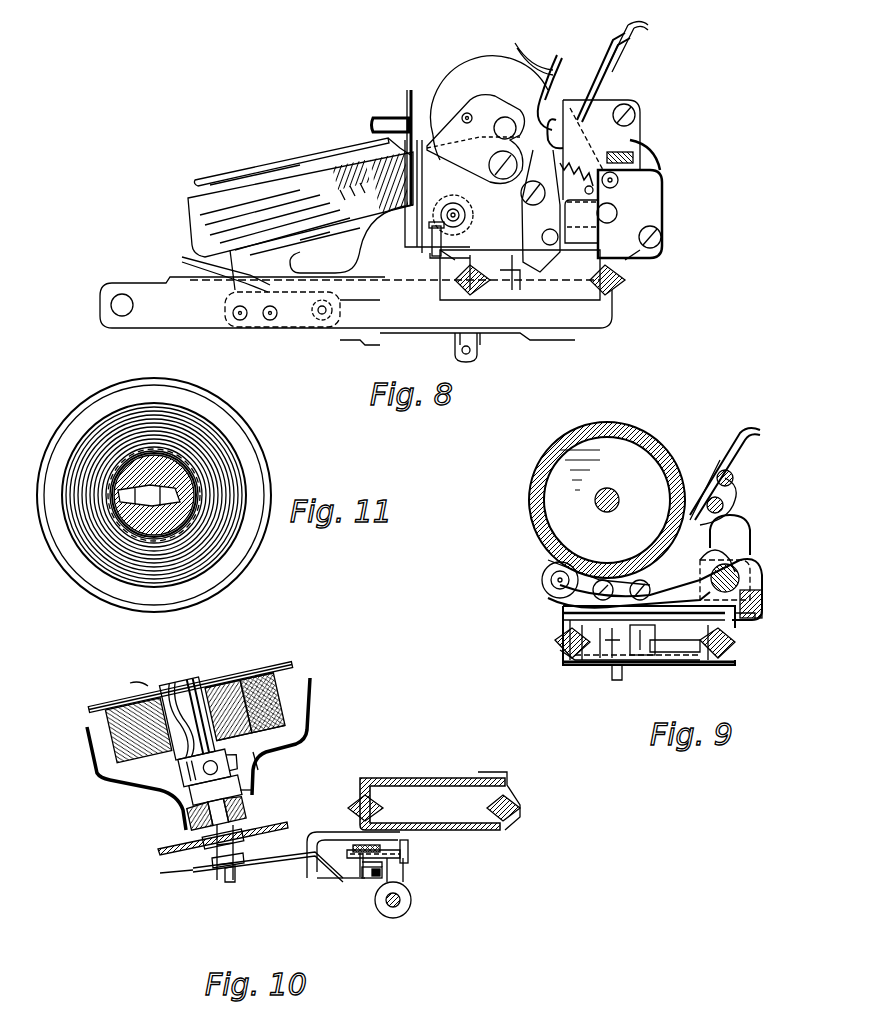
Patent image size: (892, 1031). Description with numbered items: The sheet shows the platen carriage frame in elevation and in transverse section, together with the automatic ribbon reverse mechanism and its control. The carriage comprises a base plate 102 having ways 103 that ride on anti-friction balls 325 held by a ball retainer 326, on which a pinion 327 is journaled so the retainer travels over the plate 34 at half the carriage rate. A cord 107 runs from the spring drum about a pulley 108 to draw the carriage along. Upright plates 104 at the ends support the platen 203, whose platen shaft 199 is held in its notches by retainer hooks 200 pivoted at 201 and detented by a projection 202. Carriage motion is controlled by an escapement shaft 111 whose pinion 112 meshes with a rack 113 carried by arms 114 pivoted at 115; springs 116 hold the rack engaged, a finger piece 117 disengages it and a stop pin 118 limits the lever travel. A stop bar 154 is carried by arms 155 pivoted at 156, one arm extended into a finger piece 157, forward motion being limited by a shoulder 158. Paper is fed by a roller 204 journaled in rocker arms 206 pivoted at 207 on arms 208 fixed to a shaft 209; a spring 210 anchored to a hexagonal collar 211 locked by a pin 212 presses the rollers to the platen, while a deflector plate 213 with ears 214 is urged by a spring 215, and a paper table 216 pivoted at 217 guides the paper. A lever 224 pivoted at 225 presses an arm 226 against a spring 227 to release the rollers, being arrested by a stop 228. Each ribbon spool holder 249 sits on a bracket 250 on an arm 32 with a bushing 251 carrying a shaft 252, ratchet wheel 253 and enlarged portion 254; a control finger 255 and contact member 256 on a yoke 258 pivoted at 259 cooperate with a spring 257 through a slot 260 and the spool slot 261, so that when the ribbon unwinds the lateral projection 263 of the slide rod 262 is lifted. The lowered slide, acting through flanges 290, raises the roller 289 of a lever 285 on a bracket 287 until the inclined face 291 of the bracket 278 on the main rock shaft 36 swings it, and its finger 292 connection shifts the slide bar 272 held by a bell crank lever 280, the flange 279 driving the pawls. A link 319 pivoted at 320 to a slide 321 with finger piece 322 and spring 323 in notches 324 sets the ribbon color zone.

In FIG. 8, the arm 32 is at (200, 315).
In FIG. 9, the plate 34 is at (700, 660).
In FIG. 10, the plate 34 is at (465, 828).
In FIG. 10, the main rock shaft 36 is at (402, 899).
In FIG. 9, the base plate 102 is at (570, 612).
In FIG. 9, the ways 103 is at (570, 638).
In FIG. 8, the upright plates 104 is at (382, 136).
In FIG. 9, the cord 107 is at (618, 680).
In FIG. 9, the pulley 108 is at (618, 668).
In FIG. 9, the escapement shaft 111 is at (690, 678).
In FIG. 9, the pinion 112 is at (730, 622).
In FIG. 8, the rack 113 is at (580, 300).
In FIG. 9, the rack 113 is at (700, 668).
In FIG. 8, the arms 114 is at (620, 250).
In FIG. 8, the pivot 115 is at (430, 242).
In FIG. 8, the springs 116 is at (634, 157).
In FIG. 8, the finger piece 117 is at (566, 90).
In FIG. 8, the stop pin 118 is at (440, 270).
In FIG. 8, the stop bar 154 is at (652, 212).
In FIG. 9, the stop bar 154 is at (762, 595).
In FIG. 9, the arms 155 is at (745, 575).
In FIG. 8, the pivot 156 is at (618, 182).
In FIG. 9, the pivot 156 is at (722, 545).
In FIG. 8, the finger piece 157 is at (535, 72).
In FIG. 8, the shoulder 158 is at (665, 262).
In FIG. 8, the platen shaft 199 is at (381, 100).
In FIG. 8, the retainer hooks 200 is at (505, 100).
In FIG. 8, the pivot 201 is at (388, 140).
In FIG. 8, the projection 202 is at (465, 115).
In FIG. 8, the platen 203 is at (462, 70).
In FIG. 9, the platen 203 is at (530, 498).
In FIG. 9, the roller 204 is at (552, 573).
In FIG. 9, the rocker arms 206 is at (552, 588).
In FIG. 9, the pivots 207 is at (650, 588).
In FIG. 9, the arms 208 is at (648, 582).
In FIG. 8, the shaft 209 is at (640, 225).
In FIG. 9, the shaft 209 is at (755, 575).
In FIG. 9, the spring 210 is at (650, 540).
In FIG. 9, the hexagonal collar 211 is at (725, 560).
In FIG. 9, the pin 212 is at (772, 600).
In FIG. 9, the deflector plate 213 is at (552, 560).
In FIG. 9, the ears 214 is at (570, 604).
In FIG. 9, the spring 215 is at (600, 580).
In FIG. 9, the paper table 216 is at (738, 432).
In FIG. 9, the pivot 217 is at (705, 492).
In FIG. 8, the lever 224 is at (590, 120).
In FIG. 8, the pivot 225 is at (596, 170).
In FIG. 8, the arm 226 is at (635, 240).
In FIG. 8, the spring 227 is at (640, 115).
In FIG. 8, the stop 228 is at (620, 188).
In FIG. 11, the ribbon spool holder 249 is at (268, 462).
In FIG. 10, the ribbon spool holder 249 is at (295, 748).
In FIG. 10, the bracket 250 is at (262, 778).
In FIG. 10, the bushing 251 is at (210, 836).
In FIG. 11, the shaft 252 is at (225, 548).
In FIG. 10, the shaft 252 is at (215, 688).
In FIG. 10, the ratchet wheel 253 is at (180, 848).
In FIG. 10, the enlarged portion 254 is at (180, 800).
In FIG. 11, the control finger 255 is at (100, 535).
In FIG. 10, the control finger 255 is at (131, 683).
In FIG. 11, the contact member 256 is at (190, 452).
In FIG. 10, the contact member 256 is at (305, 758).
In FIG. 11, the spring 257 is at (110, 452).
In FIG. 10, the spring 257 is at (240, 690).
In FIG. 10, the yoke 258 is at (185, 768).
In FIG. 11, the pivot 259 is at (160, 450).
In FIG. 10, the pivot 259 is at (190, 815).
In FIG. 10, the slot 260 is at (290, 692).
In FIG. 10, the slot 261 is at (180, 690).
In FIG. 10, the slide rod 262 is at (210, 860).
In FIG. 10, the lateral projection 263 is at (305, 775).
In FIG. 10, the slide bar 272 is at (392, 848).
In FIG. 10, the bracket 278 is at (398, 875).
In FIG. 10, the flange 279 is at (410, 850).
In FIG. 10, the bell crank lever 280 is at (312, 865).
In FIG. 10, the lever 285 is at (288, 868).
In FIG. 10, the bracket 287 is at (325, 832).
In FIG. 10, the roller 289 is at (370, 880).
In FIG. 10, the flanges 290 is at (215, 872).
In FIG. 10, the inclined face 291 is at (355, 878).
In FIG. 10, the finger 292 is at (330, 880).
In FIG. 8, the link 319 is at (425, 335).
In FIG. 8, the pivot 320 is at (345, 300).
In FIG. 8, the slide 321 is at (262, 327).
In FIG. 8, the finger piece 322 is at (258, 250).
In FIG. 8, the spring 323 is at (250, 240).
In FIG. 8, the notches 324 is at (248, 278).
In FIG. 9, the anti-friction balls 325 is at (560, 650).
In FIG. 9, the ball retainer 326 is at (575, 660).
In FIG. 9, the pinion 327 is at (595, 665).